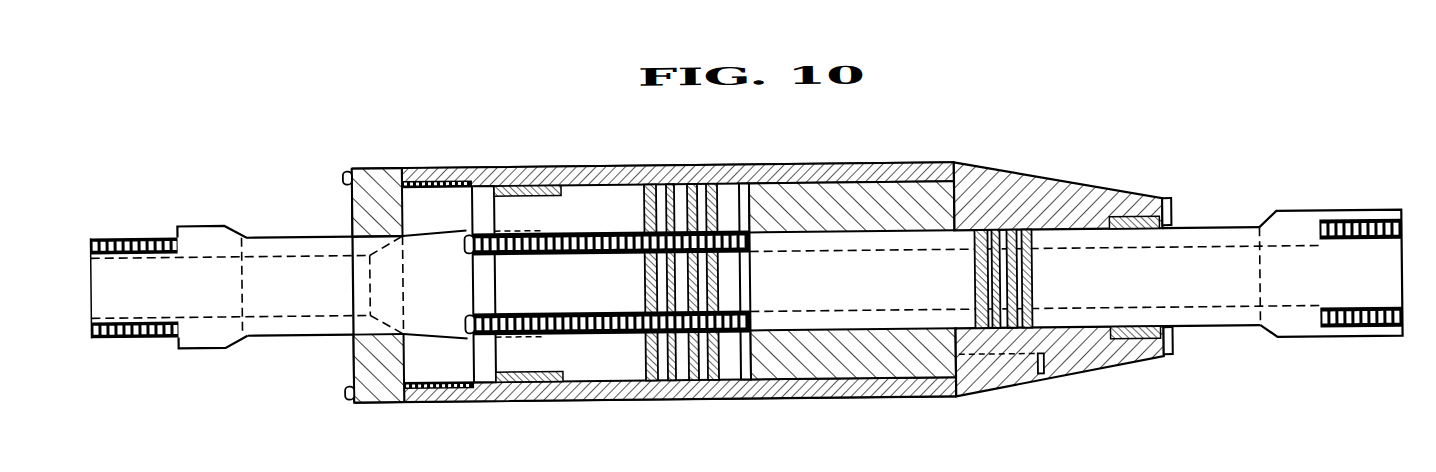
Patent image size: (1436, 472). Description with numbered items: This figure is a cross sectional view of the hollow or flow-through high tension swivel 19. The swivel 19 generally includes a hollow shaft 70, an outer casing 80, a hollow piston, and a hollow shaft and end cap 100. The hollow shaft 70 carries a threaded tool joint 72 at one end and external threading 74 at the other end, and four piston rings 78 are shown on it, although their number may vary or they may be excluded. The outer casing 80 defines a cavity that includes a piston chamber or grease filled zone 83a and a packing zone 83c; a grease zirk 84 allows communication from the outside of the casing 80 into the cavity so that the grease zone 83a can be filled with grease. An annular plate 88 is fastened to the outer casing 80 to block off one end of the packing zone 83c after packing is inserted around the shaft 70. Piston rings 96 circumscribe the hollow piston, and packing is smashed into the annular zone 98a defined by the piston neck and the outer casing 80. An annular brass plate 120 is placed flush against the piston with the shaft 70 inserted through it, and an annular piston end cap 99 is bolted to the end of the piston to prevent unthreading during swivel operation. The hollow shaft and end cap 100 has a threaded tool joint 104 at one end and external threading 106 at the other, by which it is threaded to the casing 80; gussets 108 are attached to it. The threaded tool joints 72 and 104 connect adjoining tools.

The hollow swivel 19 is at (1083, 106).
The hollow shaft 70 is at (1190, 285).
The threaded tool joint 72 is at (1290, 236).
The external threading 74 is at (625, 326).
The piston rings 78 is at (1025, 215).
The outer casing 80 is at (993, 203).
The grease filled zone 83a is at (883, 342).
The packing zone 83c is at (1155, 357).
The grease zirk 84 is at (1043, 377).
The annular plate 88 is at (1167, 202).
The piston rings 96 is at (692, 377).
The annular zone 98a is at (524, 170).
The annular piston end cap 99 is at (482, 358).
The hollow shaft and end cap 100 is at (247, 231).
The threaded tool joint 104 is at (213, 235).
The external threading 106 is at (427, 352).
The gussets 108 is at (332, 365).
The annular brass plate 120 is at (753, 301).